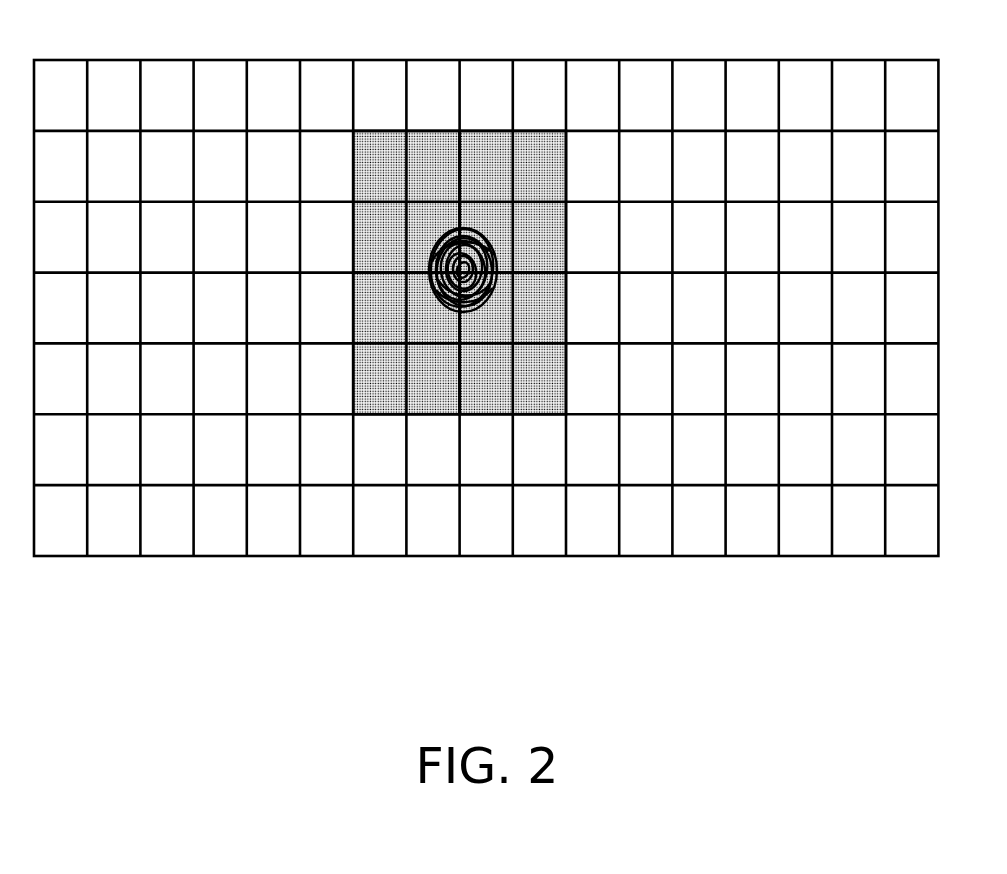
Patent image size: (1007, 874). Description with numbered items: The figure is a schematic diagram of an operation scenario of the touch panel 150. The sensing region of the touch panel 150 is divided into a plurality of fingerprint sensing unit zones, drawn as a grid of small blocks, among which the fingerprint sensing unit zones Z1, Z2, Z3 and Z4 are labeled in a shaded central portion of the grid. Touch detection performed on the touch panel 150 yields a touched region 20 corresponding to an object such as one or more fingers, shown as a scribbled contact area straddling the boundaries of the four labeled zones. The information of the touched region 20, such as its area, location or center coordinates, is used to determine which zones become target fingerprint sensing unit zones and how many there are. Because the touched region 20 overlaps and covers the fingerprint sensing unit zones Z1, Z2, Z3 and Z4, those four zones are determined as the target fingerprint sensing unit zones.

The touch panel 150 is at (495, 575).
The touched region 20 is at (463, 232).
The fingerprint sensing unit zone Z1 is at (406, 202).
The fingerprint sensing unit zone Z2 is at (513, 202).
The fingerprint sensing unit zone Z3 is at (406, 344).
The fingerprint sensing unit zone Z4 is at (513, 344).